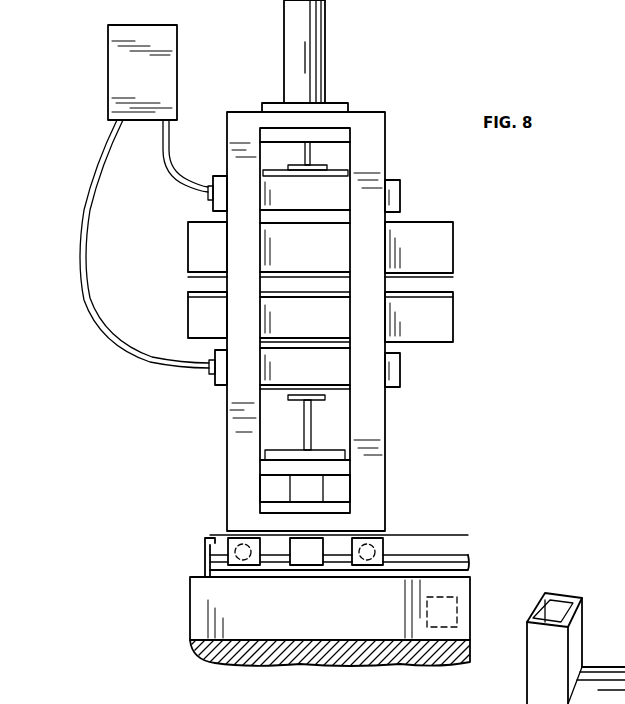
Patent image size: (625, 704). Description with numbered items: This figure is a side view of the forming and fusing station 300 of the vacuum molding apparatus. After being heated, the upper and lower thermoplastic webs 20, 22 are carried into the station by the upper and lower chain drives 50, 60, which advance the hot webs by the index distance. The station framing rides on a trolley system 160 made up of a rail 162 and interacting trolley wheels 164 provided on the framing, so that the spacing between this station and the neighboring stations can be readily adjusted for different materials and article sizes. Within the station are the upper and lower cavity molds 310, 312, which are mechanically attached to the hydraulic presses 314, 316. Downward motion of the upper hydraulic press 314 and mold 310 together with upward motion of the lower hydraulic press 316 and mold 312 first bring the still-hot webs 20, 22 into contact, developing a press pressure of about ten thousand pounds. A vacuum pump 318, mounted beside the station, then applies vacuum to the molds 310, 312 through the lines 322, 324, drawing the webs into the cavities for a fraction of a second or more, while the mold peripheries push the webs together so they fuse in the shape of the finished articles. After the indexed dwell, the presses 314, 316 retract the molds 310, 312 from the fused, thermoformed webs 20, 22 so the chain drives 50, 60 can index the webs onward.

The upper thermoplastic web 20 is at (197, 283).
The lower thermoplastic web 22 is at (192, 288).
The upper chain drive 50 is at (438, 250).
The lower chain drive 60 is at (430, 330).
The trolley system 160 is at (216, 581).
The rail 162 is at (512, 545).
The trolley wheels 164 is at (244, 538).
The forming and fusing station 300 is at (365, 102).
The upper cavity mold 310 is at (447, 173).
The lower cavity mold 312 is at (401, 370).
The hydraulic press 314 is at (311, 76).
The hydraulic press 316 is at (314, 491).
The vacuum pump 318 is at (158, 38).
The vacuum line 322 is at (176, 174).
The vacuum line 324 is at (143, 356).